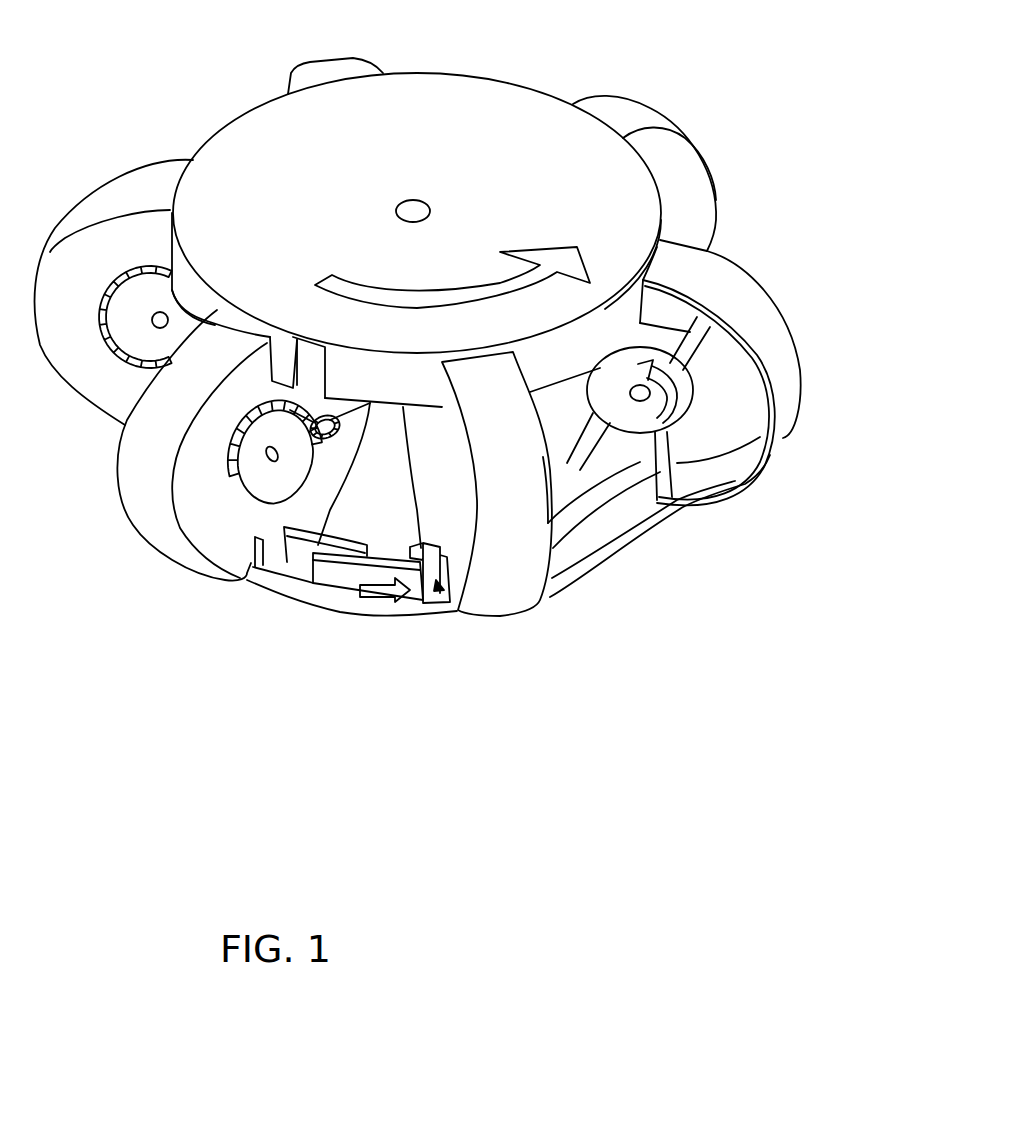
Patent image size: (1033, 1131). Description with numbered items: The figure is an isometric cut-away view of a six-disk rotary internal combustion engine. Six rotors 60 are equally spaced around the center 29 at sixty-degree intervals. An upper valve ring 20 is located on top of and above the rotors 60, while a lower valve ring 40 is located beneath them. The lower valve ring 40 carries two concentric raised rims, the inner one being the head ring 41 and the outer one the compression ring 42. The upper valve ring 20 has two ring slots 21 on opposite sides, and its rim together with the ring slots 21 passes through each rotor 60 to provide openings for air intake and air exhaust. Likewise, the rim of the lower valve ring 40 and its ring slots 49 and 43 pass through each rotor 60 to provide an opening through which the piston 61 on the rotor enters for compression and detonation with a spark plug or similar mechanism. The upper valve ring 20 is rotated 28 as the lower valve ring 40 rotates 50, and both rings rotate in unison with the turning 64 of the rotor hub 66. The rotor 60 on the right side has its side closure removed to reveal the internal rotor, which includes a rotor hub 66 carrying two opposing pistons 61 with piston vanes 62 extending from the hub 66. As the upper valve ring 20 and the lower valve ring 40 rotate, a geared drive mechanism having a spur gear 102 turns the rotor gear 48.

The upper valve ring 20 is at (512, 66).
The ring slots 21 is at (310, 340).
The rotation of upper valve ring 28 is at (450, 297).
The center 29 is at (397, 206).
The lower valve ring 40 is at (410, 640).
The head ring 41 is at (327, 530).
The compression ring 42 is at (363, 568).
The ring slot 43 is at (420, 550).
The rotor gear 48 is at (117, 350).
The ring slot 49 is at (273, 588).
The rotation of lower valve ring 50 is at (367, 601).
The rotors 60 is at (83, 176).
The piston 61 is at (707, 312).
The piston vanes 62 is at (715, 337).
The turning of rotor hub 64 is at (677, 397).
The rotor hub 66 is at (660, 425).
The spur gear 102 is at (307, 427).